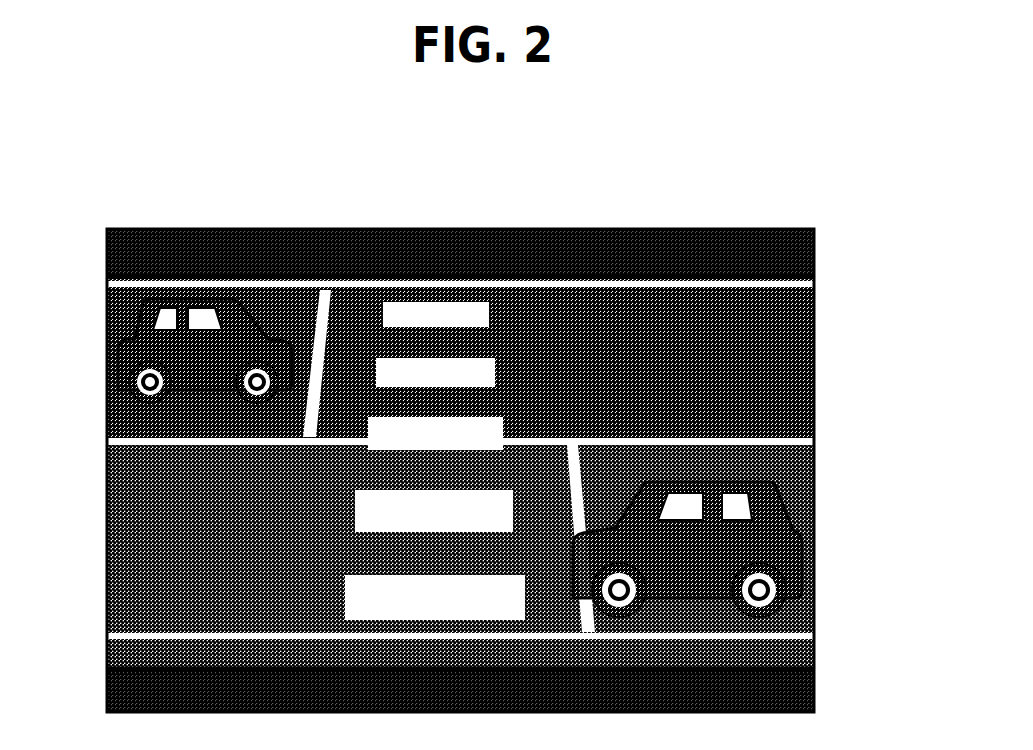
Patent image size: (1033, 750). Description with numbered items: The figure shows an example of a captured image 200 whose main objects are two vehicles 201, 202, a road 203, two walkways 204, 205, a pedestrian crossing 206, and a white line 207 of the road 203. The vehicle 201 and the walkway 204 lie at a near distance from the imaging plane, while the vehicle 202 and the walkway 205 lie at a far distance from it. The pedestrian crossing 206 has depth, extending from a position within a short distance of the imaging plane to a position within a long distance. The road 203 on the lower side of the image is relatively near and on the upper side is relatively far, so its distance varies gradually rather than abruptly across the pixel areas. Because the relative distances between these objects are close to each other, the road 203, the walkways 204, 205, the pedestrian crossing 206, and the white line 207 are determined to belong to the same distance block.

The captured image 200 is at (133, 228).
The vehicle 201 is at (795, 503).
The vehicle 202 is at (122, 315).
The road 203 is at (748, 382).
The walkway 204 is at (815, 695).
The walkway 205 is at (815, 255).
The pedestrian crossing 206 is at (340, 592).
The white line 207 is at (130, 633).